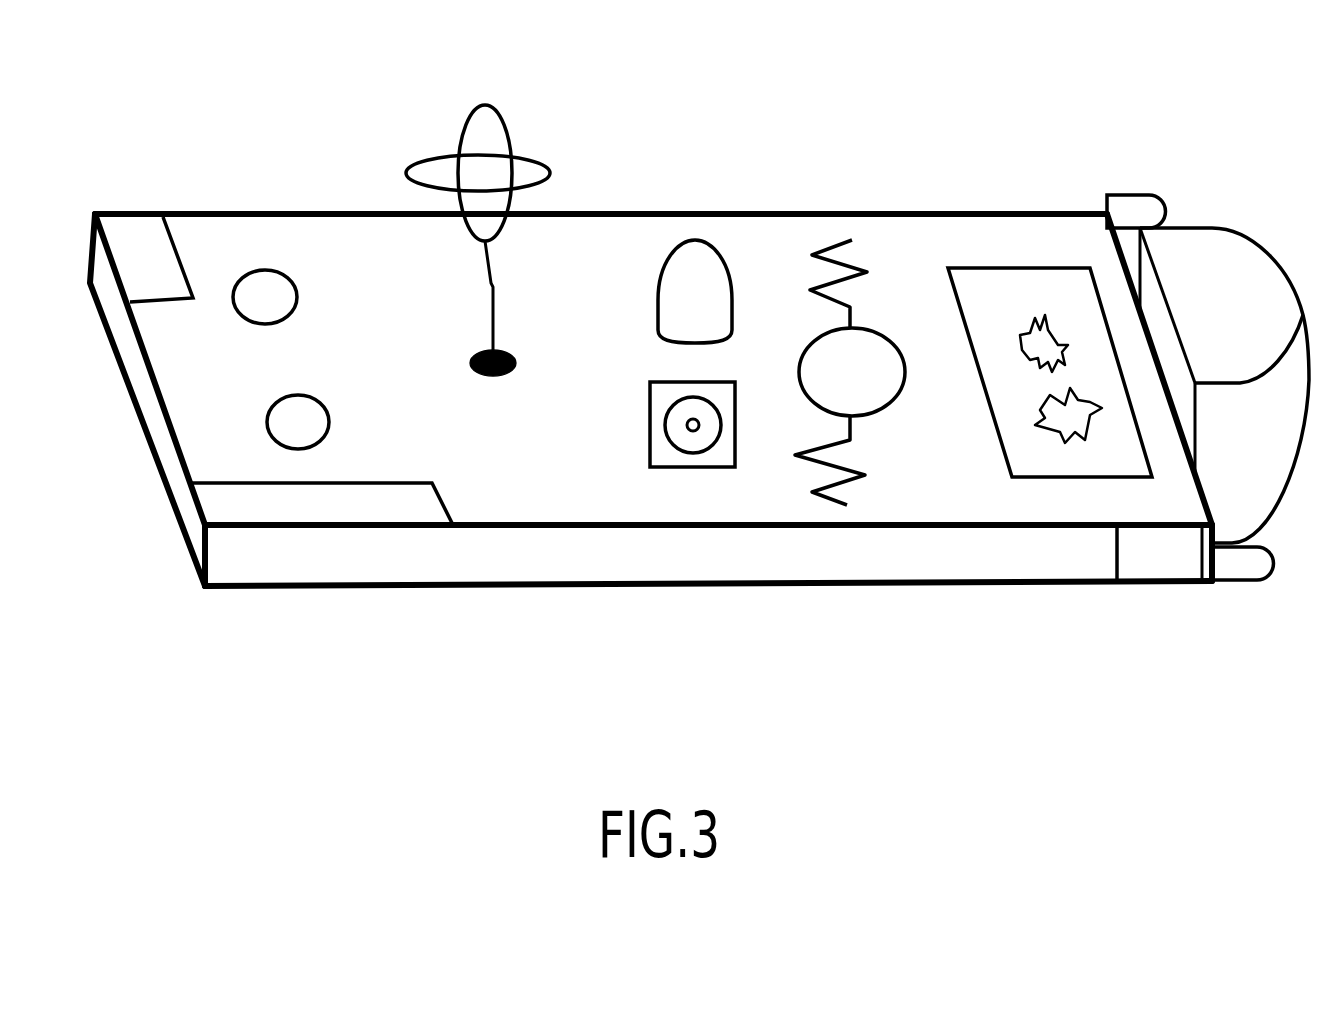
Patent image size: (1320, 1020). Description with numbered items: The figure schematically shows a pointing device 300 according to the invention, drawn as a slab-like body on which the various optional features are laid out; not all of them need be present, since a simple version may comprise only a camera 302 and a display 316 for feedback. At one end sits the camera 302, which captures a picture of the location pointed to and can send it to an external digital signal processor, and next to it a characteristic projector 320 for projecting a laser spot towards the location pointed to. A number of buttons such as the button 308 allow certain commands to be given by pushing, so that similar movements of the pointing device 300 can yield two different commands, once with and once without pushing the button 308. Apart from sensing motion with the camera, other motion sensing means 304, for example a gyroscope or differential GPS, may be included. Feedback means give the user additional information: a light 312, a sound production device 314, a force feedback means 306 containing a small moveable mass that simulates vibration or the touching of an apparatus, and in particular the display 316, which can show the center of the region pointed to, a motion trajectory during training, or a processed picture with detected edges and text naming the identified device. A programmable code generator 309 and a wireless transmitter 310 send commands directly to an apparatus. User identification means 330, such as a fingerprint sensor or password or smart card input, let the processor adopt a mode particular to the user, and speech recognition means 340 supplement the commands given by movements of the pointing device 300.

The pointing device 300 is at (536, 586).
The camera 302 is at (1285, 300).
The motion sensing means 304 is at (492, 285).
The force feedback means 306 is at (882, 357).
The button 308 is at (270, 288).
The programmable code generator 309 is at (1157, 560).
The wireless transmitter 310 is at (1250, 568).
The light 312 is at (710, 275).
The sound production device 314 is at (716, 456).
The display 316 is at (1027, 290).
The characteristic projector 320 is at (1133, 205).
The user identification means 330 is at (218, 497).
The speech recognition means 340 is at (140, 250).